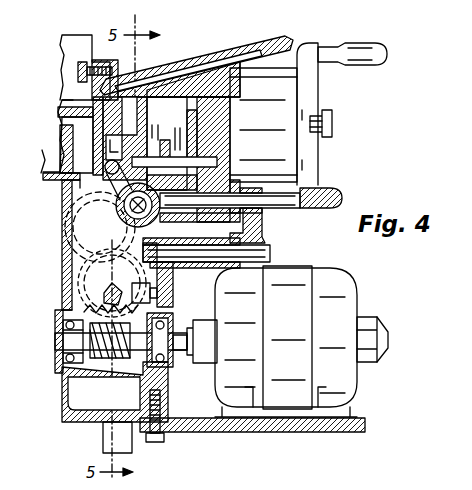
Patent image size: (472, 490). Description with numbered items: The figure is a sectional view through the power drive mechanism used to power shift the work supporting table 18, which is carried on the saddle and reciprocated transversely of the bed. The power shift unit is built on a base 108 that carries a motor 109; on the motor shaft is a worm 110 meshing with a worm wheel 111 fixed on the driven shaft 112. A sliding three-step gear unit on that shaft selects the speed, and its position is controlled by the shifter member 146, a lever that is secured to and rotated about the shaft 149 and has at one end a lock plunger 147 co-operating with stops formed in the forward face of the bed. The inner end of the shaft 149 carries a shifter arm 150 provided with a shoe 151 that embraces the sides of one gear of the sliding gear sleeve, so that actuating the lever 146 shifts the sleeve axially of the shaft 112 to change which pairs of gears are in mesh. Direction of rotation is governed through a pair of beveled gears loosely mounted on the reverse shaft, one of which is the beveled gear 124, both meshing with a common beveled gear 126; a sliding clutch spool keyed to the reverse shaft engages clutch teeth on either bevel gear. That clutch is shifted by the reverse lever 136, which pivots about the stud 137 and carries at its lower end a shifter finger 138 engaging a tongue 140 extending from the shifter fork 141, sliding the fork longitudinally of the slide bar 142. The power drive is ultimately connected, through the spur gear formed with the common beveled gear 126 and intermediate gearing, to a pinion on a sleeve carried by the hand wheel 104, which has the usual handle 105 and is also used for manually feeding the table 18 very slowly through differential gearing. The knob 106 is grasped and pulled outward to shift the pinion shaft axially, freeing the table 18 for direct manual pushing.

The work supporting table 18 is at (75, 45).
The hand wheel 104 is at (275, 75).
The handle 105 is at (383, 64).
The knob 106 is at (334, 114).
The base 108 is at (320, 434).
The motor 109 is at (347, 382).
The worm 110 is at (96, 362).
The worm wheel 111 is at (85, 307).
The driven shaft 112 is at (100, 297).
The beveled gear 124 is at (100, 227).
The common beveled gear 126 is at (140, 233).
The reverse lever 136 is at (278, 41).
The stud 137 is at (75, 112).
The shifter finger 138 is at (105, 148).
The tongue 140 is at (62, 194).
The shifter fork 141 is at (62, 230).
The slide bar 142 is at (62, 209).
The shifter member 146 is at (266, 233).
The lock plunger 147 is at (304, 192).
The shaft 149 is at (271, 257).
The shifter arm 150 is at (173, 297).
The shoe 151 is at (149, 261).